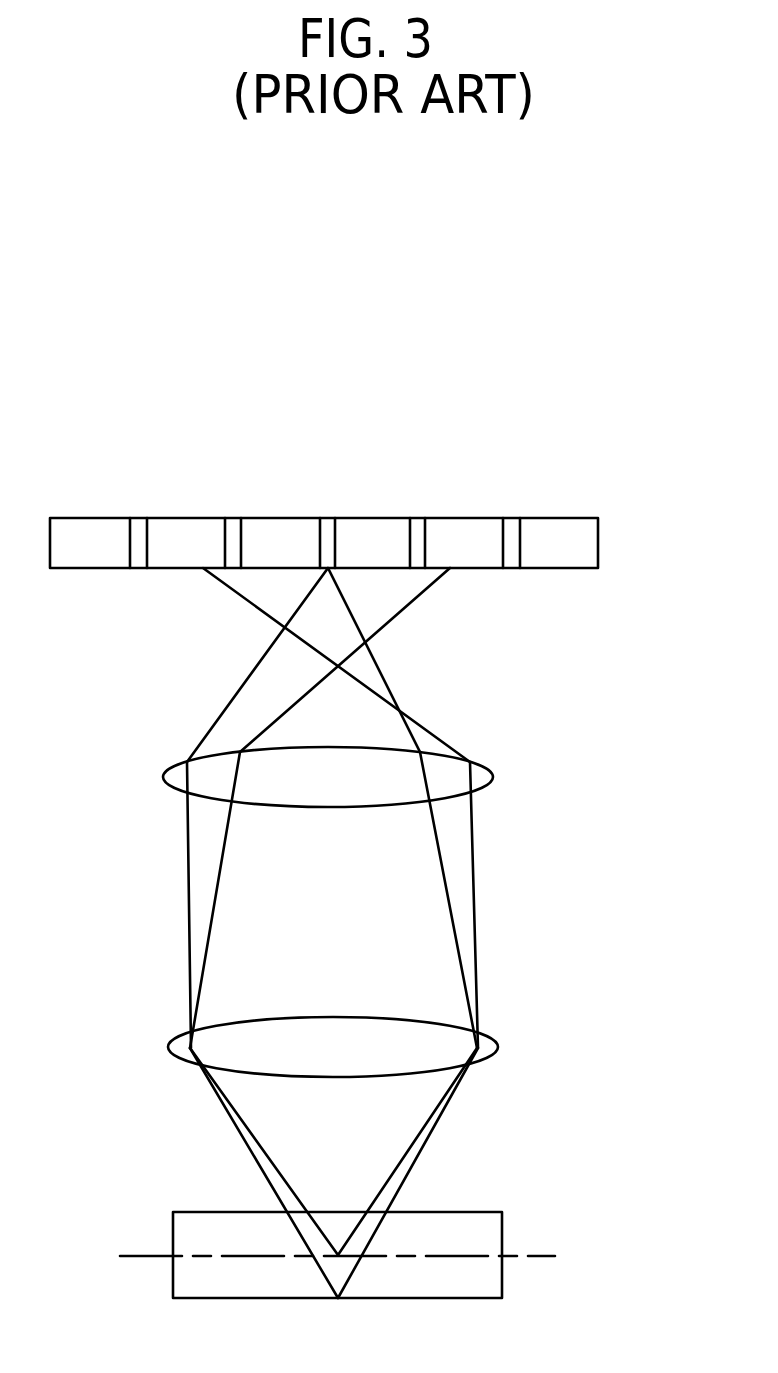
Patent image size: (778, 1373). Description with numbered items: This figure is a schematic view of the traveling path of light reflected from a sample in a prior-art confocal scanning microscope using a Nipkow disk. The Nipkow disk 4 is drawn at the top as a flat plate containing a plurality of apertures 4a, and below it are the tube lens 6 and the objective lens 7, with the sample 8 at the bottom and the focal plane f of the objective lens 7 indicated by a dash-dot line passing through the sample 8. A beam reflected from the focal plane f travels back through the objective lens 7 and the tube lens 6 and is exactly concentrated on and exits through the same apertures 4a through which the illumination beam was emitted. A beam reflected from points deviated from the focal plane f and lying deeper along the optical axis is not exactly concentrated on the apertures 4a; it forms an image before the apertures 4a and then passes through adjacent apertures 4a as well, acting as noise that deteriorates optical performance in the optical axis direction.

The Nipkow disk 4 is at (583, 545).
The apertures 4a is at (413, 518).
The tube lens 6 is at (493, 776).
The objective lens 7 is at (497, 1047).
The sample 8 is at (488, 1214).
The focal plane f is at (349, 1253).